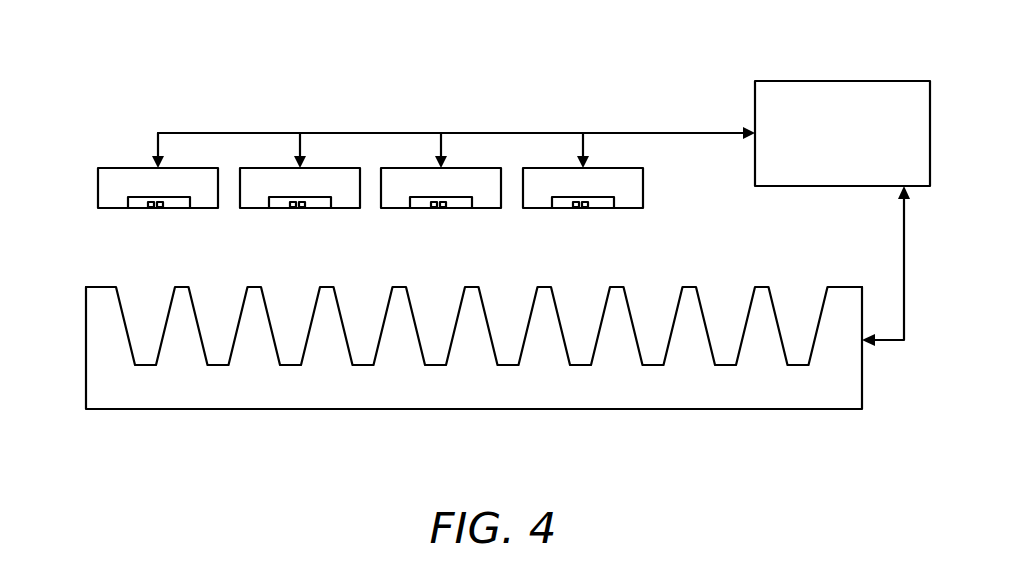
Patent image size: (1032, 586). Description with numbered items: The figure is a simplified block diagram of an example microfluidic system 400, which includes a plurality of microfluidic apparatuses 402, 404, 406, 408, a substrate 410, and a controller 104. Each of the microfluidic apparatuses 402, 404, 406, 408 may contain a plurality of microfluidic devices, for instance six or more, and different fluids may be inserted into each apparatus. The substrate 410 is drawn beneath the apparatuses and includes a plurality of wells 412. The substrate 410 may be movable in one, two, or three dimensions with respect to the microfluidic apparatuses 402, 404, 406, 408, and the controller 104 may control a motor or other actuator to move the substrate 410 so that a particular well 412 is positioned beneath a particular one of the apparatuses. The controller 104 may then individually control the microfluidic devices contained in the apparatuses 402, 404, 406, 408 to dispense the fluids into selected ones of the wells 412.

The microfluidic system 400 is at (264, 71).
The microfluidic apparatus 402 is at (127, 167).
The microfluidic apparatus 404 is at (267, 168).
The microfluidic apparatus 406 is at (460, 168).
The microfluidic apparatus 408 is at (617, 168).
The controller 104 is at (824, 157).
The substrate 410 is at (460, 370).
The well 412 is at (462, 294).